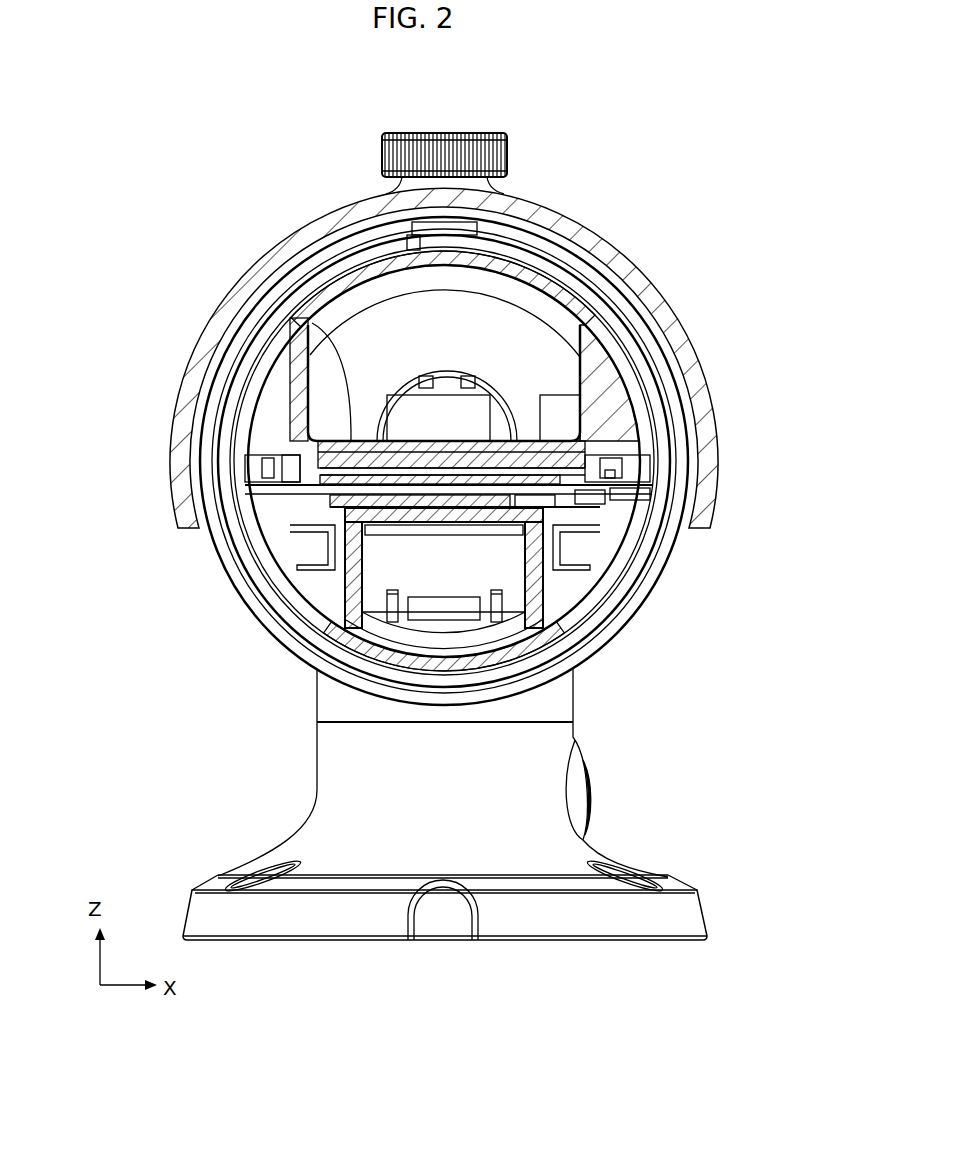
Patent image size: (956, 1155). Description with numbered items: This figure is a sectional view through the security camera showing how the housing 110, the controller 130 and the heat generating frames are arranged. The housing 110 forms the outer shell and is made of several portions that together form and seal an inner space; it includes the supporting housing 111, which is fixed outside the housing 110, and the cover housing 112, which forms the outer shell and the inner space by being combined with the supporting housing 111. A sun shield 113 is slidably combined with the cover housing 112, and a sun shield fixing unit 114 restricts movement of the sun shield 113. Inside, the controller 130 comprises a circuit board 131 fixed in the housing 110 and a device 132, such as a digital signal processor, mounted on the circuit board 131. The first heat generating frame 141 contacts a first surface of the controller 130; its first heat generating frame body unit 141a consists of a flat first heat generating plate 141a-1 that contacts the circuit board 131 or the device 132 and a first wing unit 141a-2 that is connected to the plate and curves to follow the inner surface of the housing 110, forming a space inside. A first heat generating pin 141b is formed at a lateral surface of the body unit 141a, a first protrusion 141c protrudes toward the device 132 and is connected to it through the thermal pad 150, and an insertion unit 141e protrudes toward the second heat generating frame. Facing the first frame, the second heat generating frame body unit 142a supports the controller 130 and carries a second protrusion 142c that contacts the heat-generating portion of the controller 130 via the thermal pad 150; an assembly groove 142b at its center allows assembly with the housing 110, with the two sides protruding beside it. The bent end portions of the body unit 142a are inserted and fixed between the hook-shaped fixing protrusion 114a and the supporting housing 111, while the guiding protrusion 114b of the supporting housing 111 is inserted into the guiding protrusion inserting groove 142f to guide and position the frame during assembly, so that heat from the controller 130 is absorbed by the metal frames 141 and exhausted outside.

The housing 110 is at (720, 240).
The supporting housing 111 is at (553, 350).
The cover housing 112 is at (637, 330).
The sun shield 113 is at (572, 228).
The sun shield fixing unit 114 is at (490, 157).
The fixing protrusion 114a is at (340, 670).
The guiding protrusion 114b is at (558, 672).
The controller 130 is at (770, 414).
The circuit board 131 is at (642, 488).
The device 132 is at (578, 444).
The first heat generating frame 141 is at (362, 262).
The first heat generating frame body unit 141a is at (150, 304).
The first heat generating plate 141a-1 is at (298, 312).
The first wing unit 141a-2 is at (300, 350).
The first heat generating pin 141b is at (260, 397).
The first protrusion 141c is at (290, 462).
The insertion unit 141e is at (613, 500).
The second heat generating frame body unit 142a is at (395, 560).
The assembly groove 142b is at (437, 607).
The second protrusion 142c is at (297, 543).
The guiding protrusion inserting groove 142f is at (505, 605).
The thermal pad 150 is at (257, 493).